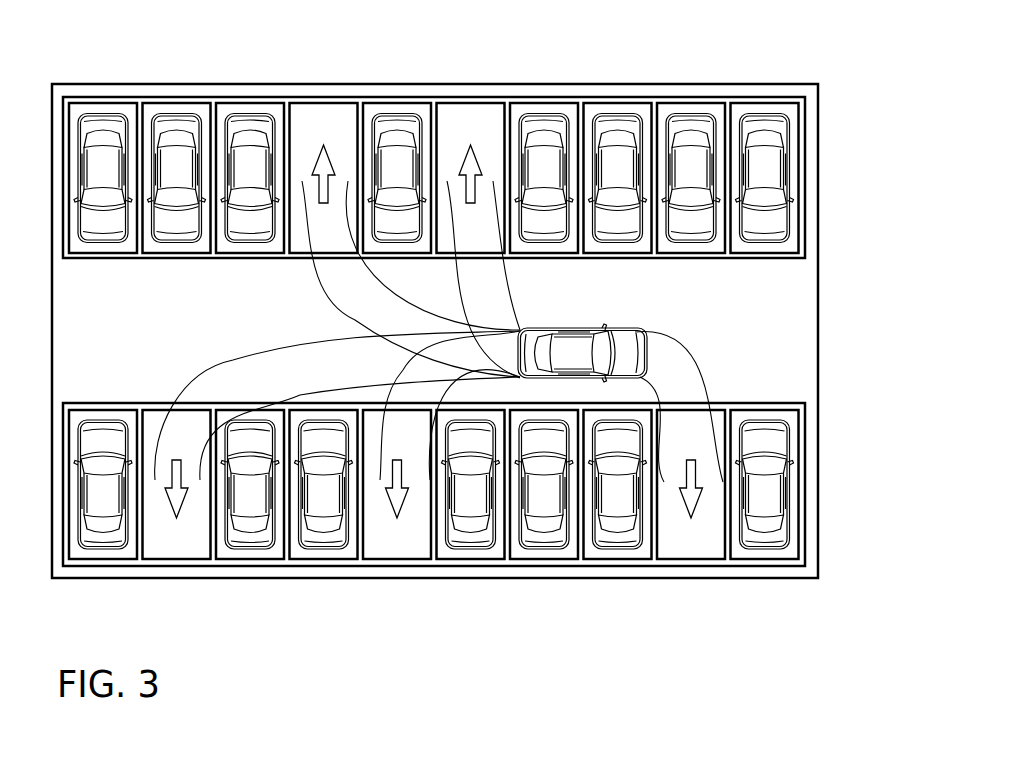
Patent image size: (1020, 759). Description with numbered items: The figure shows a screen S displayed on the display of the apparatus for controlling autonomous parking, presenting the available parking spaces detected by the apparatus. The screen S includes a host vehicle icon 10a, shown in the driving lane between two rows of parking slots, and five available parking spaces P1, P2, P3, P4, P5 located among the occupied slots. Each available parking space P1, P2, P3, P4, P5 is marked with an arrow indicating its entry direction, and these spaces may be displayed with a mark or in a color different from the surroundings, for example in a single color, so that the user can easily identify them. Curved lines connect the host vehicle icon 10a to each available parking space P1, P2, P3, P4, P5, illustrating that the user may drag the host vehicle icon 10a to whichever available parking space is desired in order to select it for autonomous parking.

The screen S is at (689, 84).
The available parking space P1 is at (328, 118).
The available parking space P2 is at (475, 118).
The available parking space P3 is at (177, 550).
The available parking space P4 is at (397, 550).
The available parking space P5 is at (689, 548).
The host vehicle icon 10a is at (618, 342).